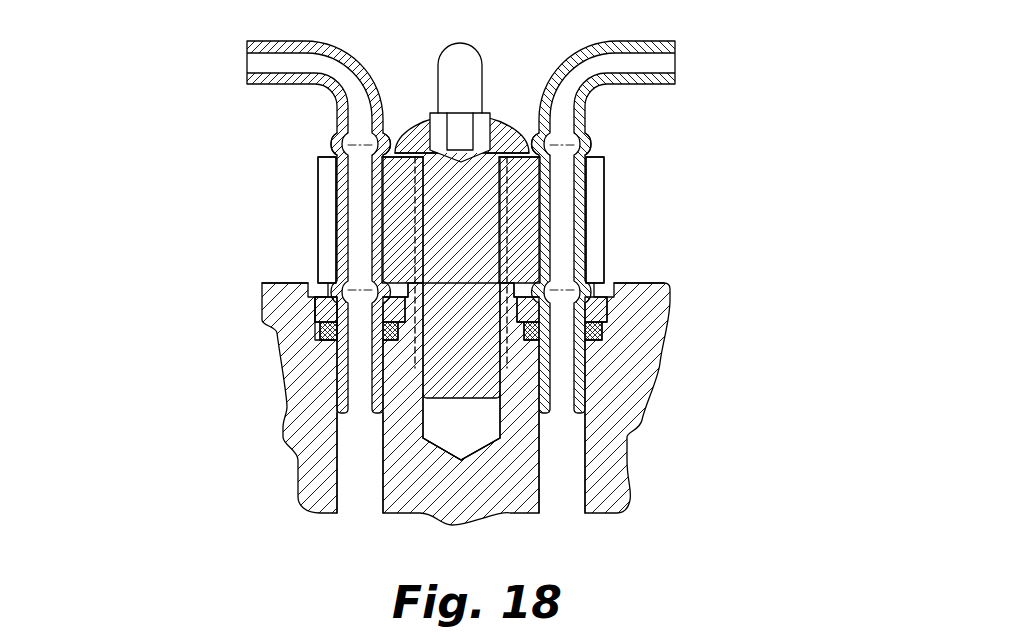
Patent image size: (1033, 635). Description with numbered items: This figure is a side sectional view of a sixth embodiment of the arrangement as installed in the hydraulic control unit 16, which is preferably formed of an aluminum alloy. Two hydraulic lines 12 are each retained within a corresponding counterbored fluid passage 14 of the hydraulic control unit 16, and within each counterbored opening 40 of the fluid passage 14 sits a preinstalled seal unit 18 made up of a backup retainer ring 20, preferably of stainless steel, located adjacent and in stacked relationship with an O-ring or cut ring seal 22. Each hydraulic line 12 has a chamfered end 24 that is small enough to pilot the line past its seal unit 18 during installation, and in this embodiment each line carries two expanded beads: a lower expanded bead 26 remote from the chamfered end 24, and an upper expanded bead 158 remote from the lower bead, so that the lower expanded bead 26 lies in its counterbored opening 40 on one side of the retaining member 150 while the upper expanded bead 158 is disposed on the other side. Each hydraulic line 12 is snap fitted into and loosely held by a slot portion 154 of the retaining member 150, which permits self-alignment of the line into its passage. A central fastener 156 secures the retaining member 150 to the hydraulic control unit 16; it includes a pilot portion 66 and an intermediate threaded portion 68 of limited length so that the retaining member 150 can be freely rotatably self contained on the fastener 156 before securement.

The hydraulic line 12 is at (282, 40).
The fluid passage 14 is at (587, 503).
The hydraulic control unit 16 is at (638, 396).
The seal unit 18 is at (311, 334).
The backup retainer ring 20 is at (610, 312).
The O-ring or cut ring seal 22 is at (603, 330).
The chamfered end 24 is at (323, 422).
The lower expanded bead 26 is at (607, 287).
The counterbored opening 40 is at (303, 287).
The pilot portion 66 is at (432, 390).
The intermediate threaded portion 68 is at (434, 293).
The retaining member 150 is at (317, 180).
The slot portion 154 is at (328, 237).
The fastener 156 is at (512, 125).
The upper expanded bead 158 is at (330, 143).